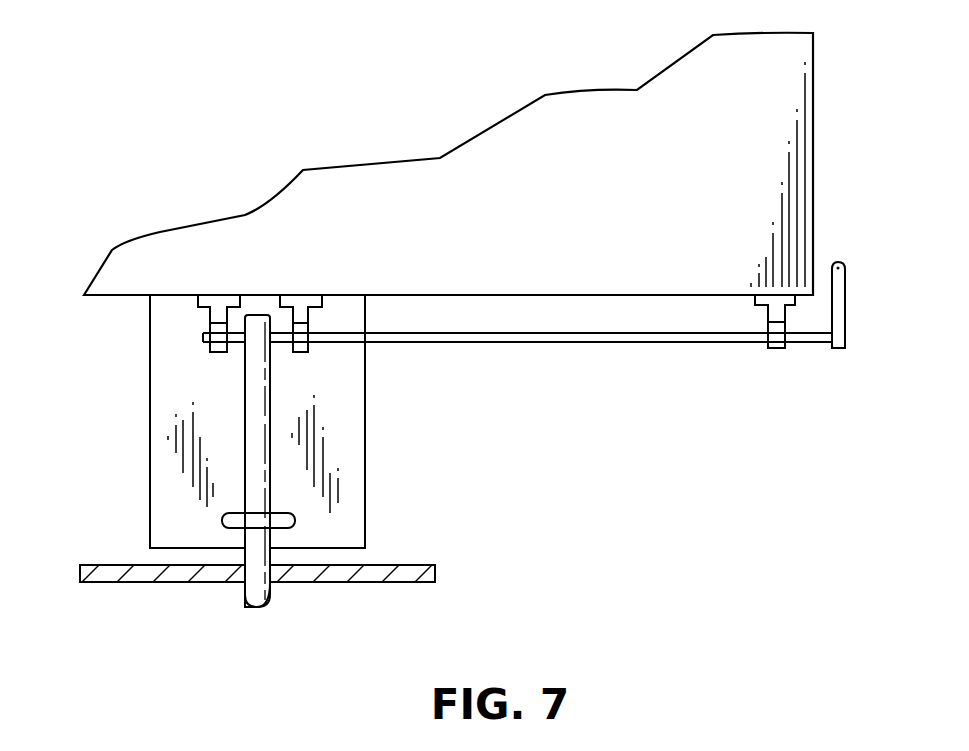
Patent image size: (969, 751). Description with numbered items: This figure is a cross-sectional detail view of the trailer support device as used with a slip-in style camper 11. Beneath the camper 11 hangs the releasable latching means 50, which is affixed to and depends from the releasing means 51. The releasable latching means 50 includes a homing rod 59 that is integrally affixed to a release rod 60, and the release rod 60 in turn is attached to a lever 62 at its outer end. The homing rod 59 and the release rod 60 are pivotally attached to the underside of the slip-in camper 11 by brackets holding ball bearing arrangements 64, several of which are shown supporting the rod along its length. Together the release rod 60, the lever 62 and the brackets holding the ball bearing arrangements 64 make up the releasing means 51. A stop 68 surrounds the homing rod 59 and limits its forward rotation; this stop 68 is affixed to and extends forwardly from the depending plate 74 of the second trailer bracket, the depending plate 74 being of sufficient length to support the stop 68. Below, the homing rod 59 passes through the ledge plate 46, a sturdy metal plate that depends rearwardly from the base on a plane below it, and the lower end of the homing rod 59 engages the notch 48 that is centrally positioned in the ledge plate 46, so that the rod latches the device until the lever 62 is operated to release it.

The slip-in camper 11 is at (780, 124).
The depending plate 74 is at (168, 405).
The release rod 60 is at (697, 343).
The brackets holding ball bearing arrangements 64 is at (222, 352).
The lever 62 is at (842, 300).
The releasable latching means 50 is at (326, 461).
The homing rod 59 is at (258, 462).
The stop 68 is at (233, 520).
The ledge plate 46 is at (100, 570).
The notch 48 is at (243, 586).
The releasing means 51 is at (576, 343).